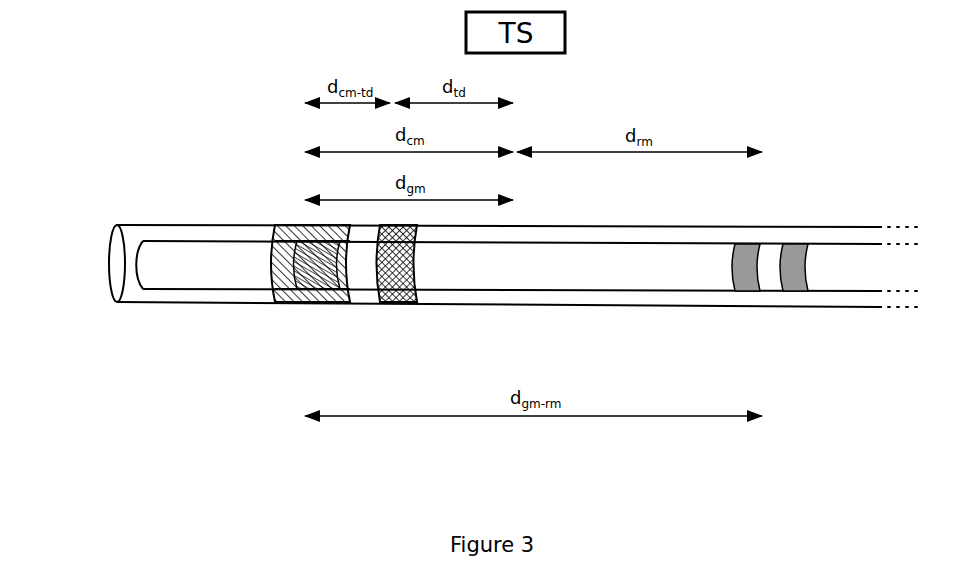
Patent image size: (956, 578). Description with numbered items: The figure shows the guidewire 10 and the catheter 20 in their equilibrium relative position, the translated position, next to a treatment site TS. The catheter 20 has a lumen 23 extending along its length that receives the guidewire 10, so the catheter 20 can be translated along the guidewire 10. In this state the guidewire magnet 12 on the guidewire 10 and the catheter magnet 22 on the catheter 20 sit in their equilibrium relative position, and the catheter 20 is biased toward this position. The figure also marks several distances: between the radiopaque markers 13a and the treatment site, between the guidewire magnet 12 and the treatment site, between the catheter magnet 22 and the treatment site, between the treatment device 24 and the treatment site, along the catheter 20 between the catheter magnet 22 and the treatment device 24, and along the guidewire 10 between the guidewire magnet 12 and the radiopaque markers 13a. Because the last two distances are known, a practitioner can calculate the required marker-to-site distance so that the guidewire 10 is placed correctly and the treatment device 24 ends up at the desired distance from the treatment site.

The guidewire 10 is at (175, 238).
The catheter 20 is at (473, 296).
The lumen 23 is at (96, 256).
The guidewire magnet 12 is at (318, 306).
The catheter magnet 22 is at (288, 306).
The treatment device 24 is at (393, 306).
The radiopaque markers 13a is at (745, 292).